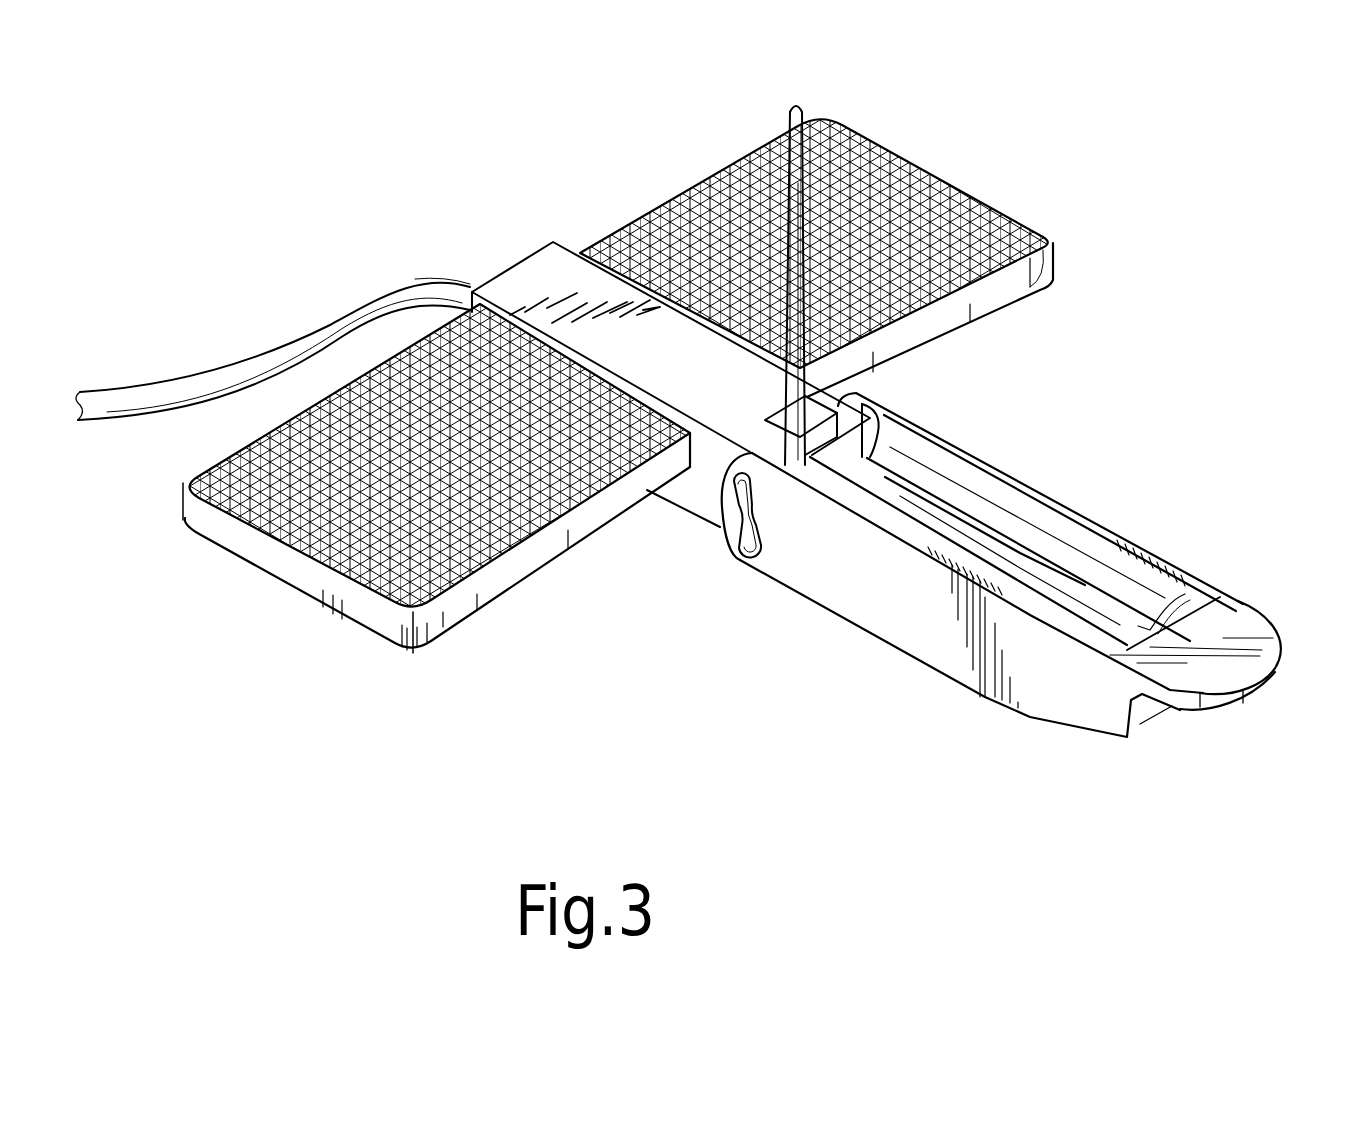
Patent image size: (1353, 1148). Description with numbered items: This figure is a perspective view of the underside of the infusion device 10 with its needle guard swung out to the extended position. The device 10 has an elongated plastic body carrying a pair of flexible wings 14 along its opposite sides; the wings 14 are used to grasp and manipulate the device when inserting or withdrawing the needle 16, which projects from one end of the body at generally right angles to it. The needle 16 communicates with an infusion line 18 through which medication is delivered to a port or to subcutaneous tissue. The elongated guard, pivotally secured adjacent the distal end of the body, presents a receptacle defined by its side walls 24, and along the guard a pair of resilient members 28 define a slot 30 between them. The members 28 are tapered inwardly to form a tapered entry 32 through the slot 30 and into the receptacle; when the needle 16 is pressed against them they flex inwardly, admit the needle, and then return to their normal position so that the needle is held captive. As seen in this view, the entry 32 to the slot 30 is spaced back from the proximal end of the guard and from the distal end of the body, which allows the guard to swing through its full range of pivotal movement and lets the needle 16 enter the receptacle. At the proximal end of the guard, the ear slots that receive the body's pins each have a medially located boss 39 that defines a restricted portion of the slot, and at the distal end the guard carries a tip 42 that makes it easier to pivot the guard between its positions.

The infusion device 10 is at (400, 236).
The flexible wings 14 is at (460, 553).
The needle 16 is at (785, 200).
The infusion line 18 is at (148, 393).
The side walls 24 is at (887, 583).
The members 28 is at (1120, 545).
The slot 30 is at (958, 507).
The tapered entry 32 is at (880, 435).
The boss 39 is at (728, 522).
The tip 42 is at (1273, 677).